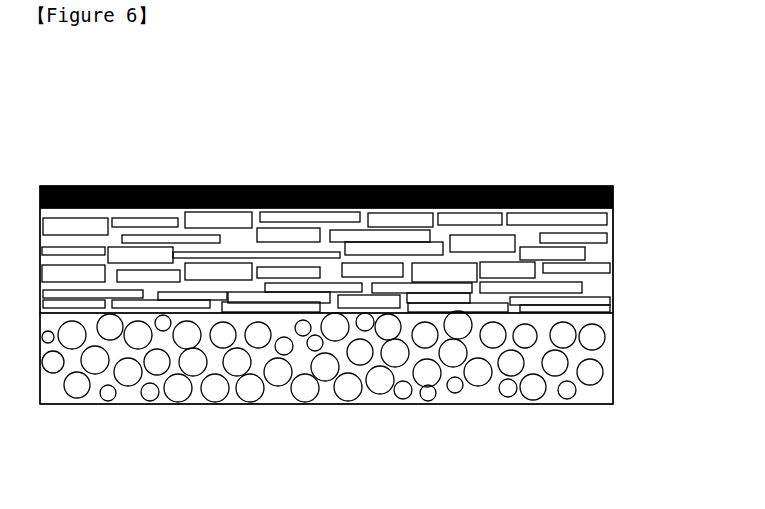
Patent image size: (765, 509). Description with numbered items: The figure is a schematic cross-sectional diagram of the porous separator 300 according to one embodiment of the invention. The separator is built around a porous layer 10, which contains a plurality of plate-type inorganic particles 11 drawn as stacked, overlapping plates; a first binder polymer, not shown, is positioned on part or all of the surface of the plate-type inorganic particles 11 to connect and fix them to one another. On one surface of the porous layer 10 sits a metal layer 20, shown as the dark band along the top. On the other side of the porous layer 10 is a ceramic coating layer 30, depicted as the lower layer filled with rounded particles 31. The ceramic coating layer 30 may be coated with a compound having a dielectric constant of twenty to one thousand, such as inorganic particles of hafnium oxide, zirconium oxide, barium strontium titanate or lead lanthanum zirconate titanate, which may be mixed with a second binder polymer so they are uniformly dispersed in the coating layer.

The porous separator 300 is at (166, 99).
The metal layer 20 is at (349, 180).
The porous layer 10 is at (646, 263).
The plate-type inorganic particles 11 is at (600, 237).
The ceramic coating layer 30 is at (228, 420).
The pores 31 is at (602, 372).